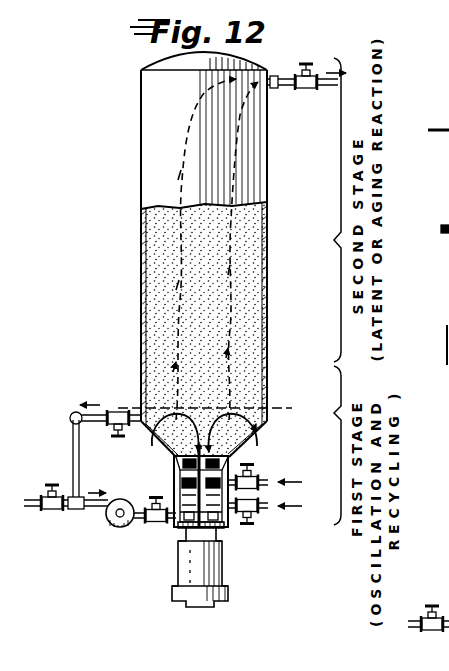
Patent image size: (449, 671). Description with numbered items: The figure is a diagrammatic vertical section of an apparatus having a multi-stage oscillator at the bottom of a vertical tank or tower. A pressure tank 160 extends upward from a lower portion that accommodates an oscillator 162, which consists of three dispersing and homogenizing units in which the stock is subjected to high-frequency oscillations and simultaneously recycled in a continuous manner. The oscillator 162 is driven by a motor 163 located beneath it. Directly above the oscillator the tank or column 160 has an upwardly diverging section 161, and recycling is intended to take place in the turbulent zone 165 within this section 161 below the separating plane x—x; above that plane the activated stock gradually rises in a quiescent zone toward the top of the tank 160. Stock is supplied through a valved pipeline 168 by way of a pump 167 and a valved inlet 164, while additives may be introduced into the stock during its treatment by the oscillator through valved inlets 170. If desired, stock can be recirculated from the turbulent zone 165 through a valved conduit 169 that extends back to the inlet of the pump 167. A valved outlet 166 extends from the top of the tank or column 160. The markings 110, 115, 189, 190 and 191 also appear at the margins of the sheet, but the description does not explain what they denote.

The pressure tank 160 is at (144, 156).
The upwardly diverging section 161 is at (176, 456).
The oscillator 162 is at (226, 523).
The motor 163 is at (218, 563).
The valved inlet 164 is at (156, 524).
The turbulent zone 165 is at (172, 430).
The valved outlet 166 is at (305, 92).
The pump 167 is at (115, 528).
The valved pipeline 168 is at (53, 511).
The valved conduit 169 is at (110, 410).
The valved inlets 170 is at (252, 484).
The adjacent figure element 110 is at (268, 660).
The adjacent figure element 115 is at (352, 660).
The valve 189 is at (436, 631).
The adjacent figure element 190 is at (431, 295).
The adjacent figure element 191 is at (435, 167).